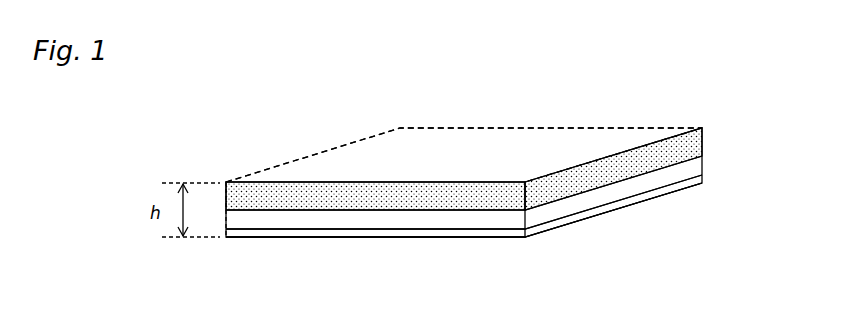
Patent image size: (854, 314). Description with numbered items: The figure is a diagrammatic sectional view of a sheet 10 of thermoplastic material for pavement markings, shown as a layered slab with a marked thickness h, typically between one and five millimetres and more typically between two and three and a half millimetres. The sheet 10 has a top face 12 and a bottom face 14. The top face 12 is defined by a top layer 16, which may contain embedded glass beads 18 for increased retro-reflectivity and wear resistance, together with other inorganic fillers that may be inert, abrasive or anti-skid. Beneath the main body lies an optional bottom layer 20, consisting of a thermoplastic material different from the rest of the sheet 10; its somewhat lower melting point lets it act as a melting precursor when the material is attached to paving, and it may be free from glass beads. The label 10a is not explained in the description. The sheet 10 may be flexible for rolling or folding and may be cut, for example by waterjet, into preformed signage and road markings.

The sheet 10 is at (683, 58).
The article variant 10a is at (296, 309).
The top face 12 is at (455, 153).
The bottom face 14 is at (437, 237).
The top layer 16 is at (705, 127).
The glass beads 18 is at (650, 158).
The bottom layer 20 is at (607, 210).